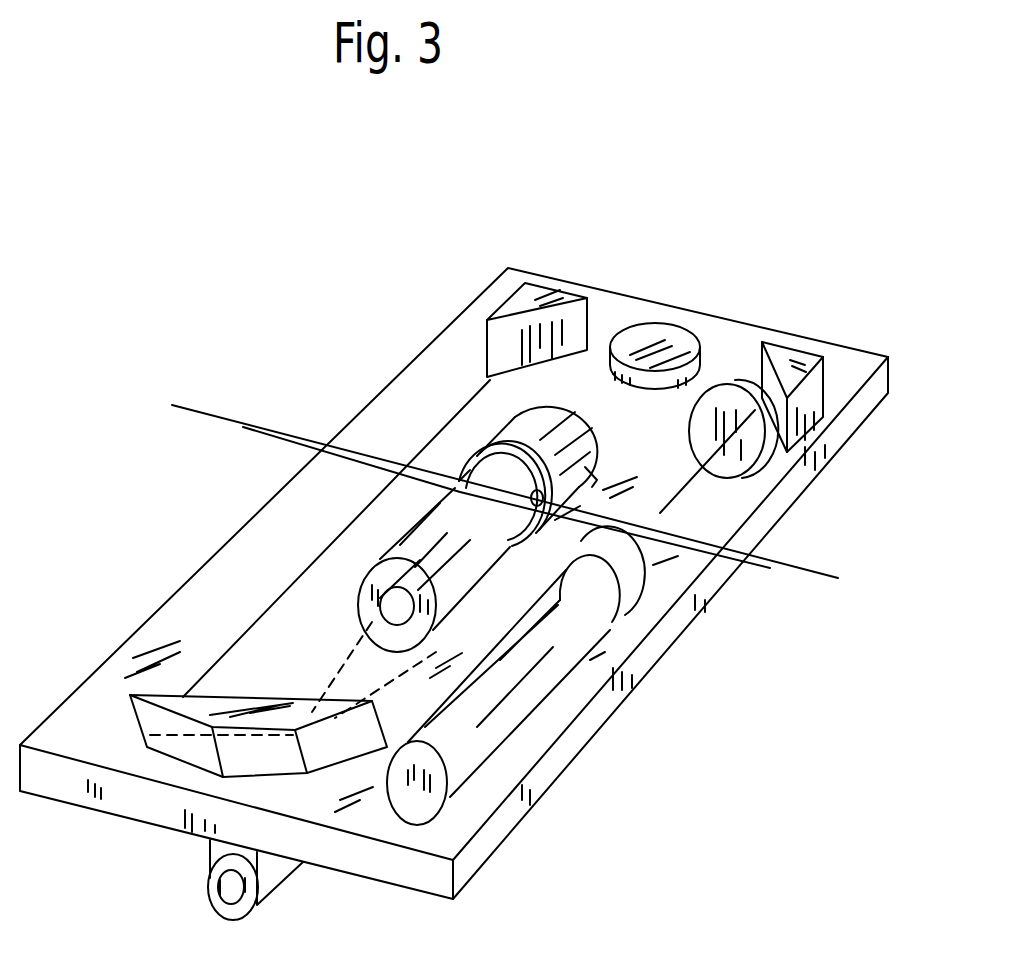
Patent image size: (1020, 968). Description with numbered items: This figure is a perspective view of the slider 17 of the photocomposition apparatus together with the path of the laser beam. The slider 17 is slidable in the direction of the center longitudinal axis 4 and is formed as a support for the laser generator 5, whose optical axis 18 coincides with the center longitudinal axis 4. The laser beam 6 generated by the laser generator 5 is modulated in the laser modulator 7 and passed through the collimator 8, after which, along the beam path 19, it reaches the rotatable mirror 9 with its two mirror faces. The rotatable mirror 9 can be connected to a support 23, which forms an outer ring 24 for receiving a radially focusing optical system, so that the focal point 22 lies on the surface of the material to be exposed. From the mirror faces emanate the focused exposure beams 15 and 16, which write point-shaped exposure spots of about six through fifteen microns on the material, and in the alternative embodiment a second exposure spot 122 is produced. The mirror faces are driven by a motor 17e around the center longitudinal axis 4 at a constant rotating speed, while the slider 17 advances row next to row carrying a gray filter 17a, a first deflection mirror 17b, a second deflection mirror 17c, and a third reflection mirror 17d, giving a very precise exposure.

The center longitudinal axis 4 is at (455, 517).
The laser generator 5 is at (590, 637).
The laser beam 6 is at (675, 494).
The laser modulator 7 is at (660, 342).
The collimator 8 is at (473, 557).
The rotatable mirror 9 is at (478, 450).
The focused exposure beam 15 is at (270, 428).
The focused exposure beam 16 is at (768, 570).
The slider 17 is at (505, 828).
The gray filter 17a is at (745, 452).
The first deflection mirror 17b is at (800, 360).
The second deflection mirror 17c is at (515, 305).
The third reflection mirror 17d is at (190, 748).
The motor 17e is at (551, 418).
The optical axis 18 is at (688, 483).
The beam path 19 is at (719, 367).
The focal point 22 is at (838, 579).
The support 23 is at (528, 526).
The outer ring 24 is at (507, 462).
The second exposure spot 122 is at (200, 412).